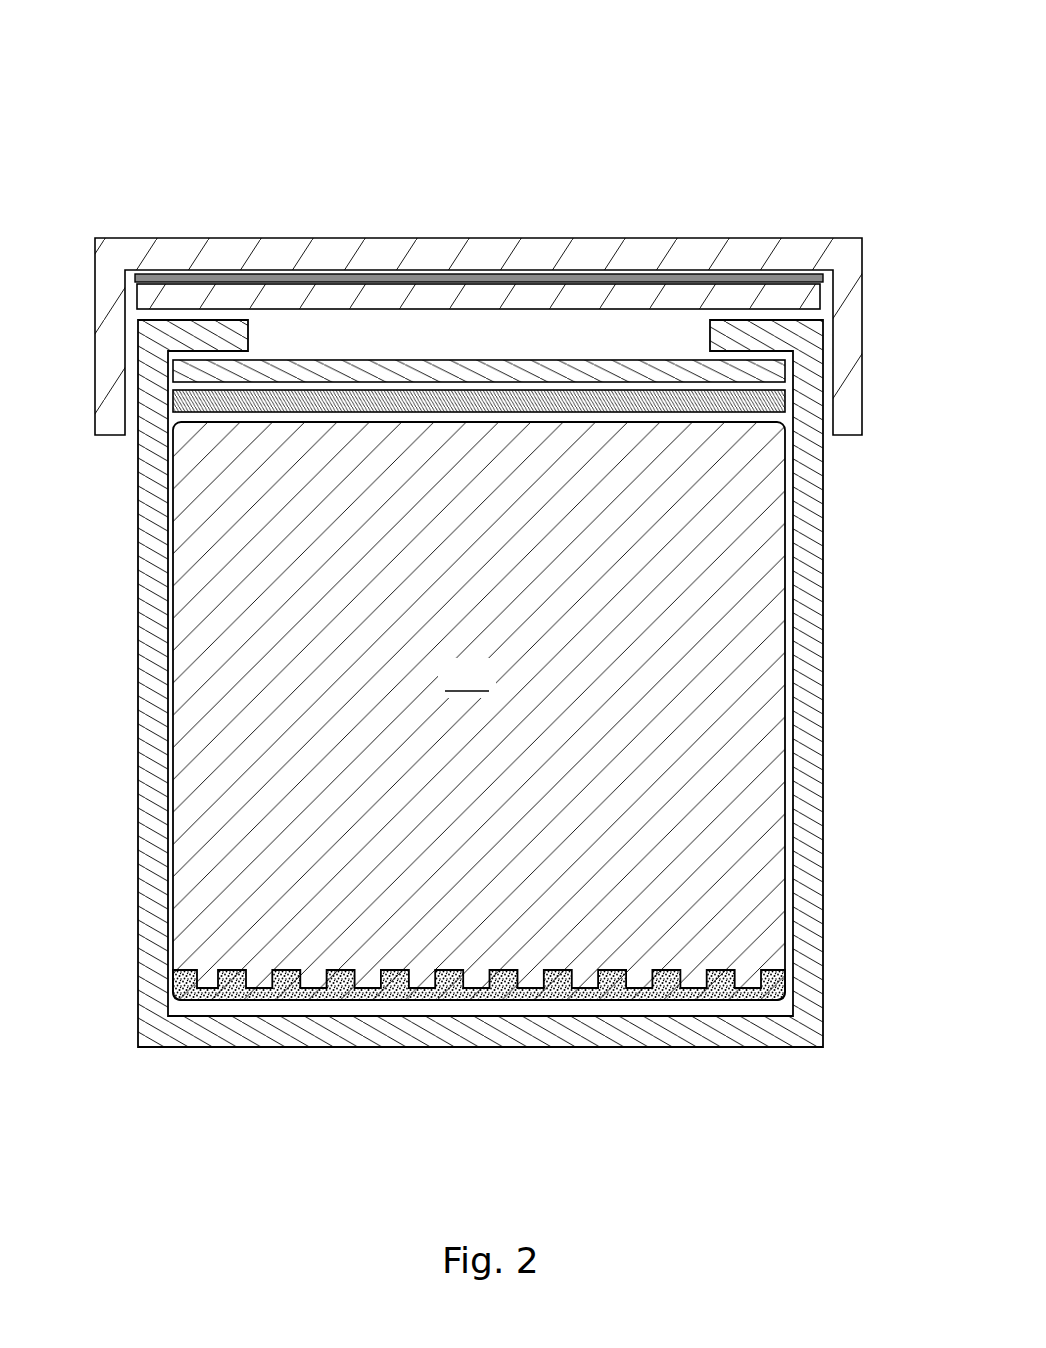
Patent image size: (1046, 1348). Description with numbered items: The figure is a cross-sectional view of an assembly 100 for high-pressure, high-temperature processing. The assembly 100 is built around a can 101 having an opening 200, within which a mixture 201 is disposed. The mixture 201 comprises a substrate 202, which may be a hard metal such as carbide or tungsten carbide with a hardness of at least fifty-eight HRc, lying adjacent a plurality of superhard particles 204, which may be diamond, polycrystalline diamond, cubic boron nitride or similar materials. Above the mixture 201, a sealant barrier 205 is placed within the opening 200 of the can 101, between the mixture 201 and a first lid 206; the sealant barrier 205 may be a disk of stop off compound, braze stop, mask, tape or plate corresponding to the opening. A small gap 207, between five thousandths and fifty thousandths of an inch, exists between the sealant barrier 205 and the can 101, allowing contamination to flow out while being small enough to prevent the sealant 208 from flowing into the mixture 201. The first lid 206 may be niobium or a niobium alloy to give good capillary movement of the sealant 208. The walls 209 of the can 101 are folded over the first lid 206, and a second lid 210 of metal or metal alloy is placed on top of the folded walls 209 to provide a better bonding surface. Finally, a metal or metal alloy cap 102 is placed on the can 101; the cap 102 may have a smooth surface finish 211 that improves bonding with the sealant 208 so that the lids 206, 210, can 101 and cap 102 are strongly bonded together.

The assembly 100 is at (486, 577).
The cap 102 is at (176, 100).
The can 101 is at (530, 683).
The opening 200 is at (424, 652).
The mixture 201 is at (215, 722).
The substrate 202 is at (479, 711).
The superhard particles 204 is at (667, 995).
The sealant barrier 205 is at (490, 400).
The first lid 206 is at (585, 370).
The gap 207 is at (166, 398).
The sealant 208 is at (745, 277).
The walls 209 is at (808, 523).
The second lid 210 is at (630, 295).
The smooth surface finish 211 is at (826, 398).